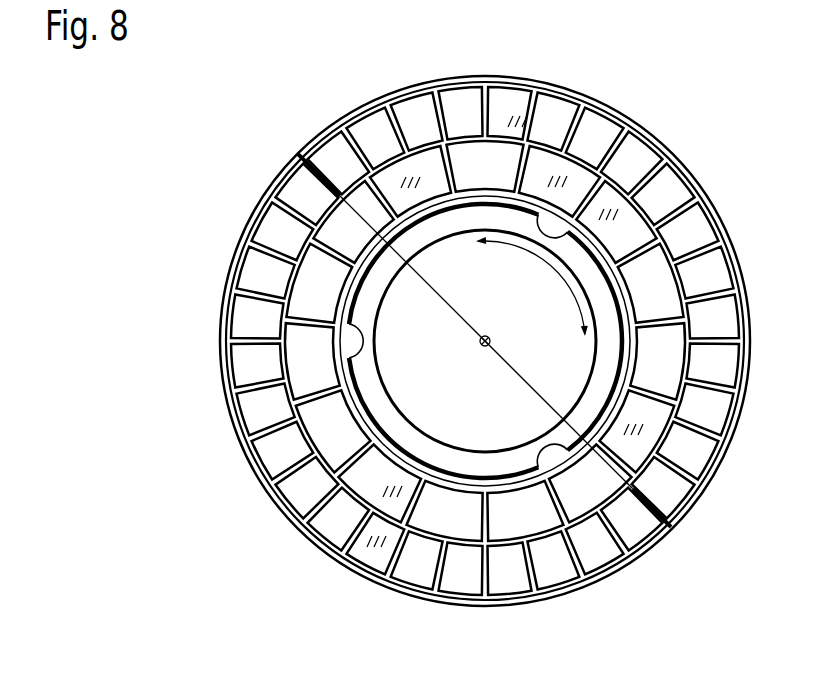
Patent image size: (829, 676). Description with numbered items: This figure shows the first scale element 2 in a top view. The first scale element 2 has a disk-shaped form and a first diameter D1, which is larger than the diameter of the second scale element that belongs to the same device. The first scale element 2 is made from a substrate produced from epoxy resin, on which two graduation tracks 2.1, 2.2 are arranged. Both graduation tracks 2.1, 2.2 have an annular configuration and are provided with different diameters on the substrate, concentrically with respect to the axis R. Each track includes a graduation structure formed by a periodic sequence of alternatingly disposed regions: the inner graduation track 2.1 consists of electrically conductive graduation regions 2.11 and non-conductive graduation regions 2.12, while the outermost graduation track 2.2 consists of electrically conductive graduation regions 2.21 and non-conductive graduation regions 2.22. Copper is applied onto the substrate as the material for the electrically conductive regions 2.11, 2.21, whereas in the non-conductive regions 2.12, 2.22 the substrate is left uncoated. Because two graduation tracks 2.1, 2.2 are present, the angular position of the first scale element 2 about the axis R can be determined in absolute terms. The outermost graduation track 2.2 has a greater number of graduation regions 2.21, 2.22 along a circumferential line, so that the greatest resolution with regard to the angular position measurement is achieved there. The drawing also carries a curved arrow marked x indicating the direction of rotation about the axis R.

The first scale element 2 is at (262, 193).
The graduation track 2.1 is at (342, 309).
The electrically conductive graduation regions 2.11 is at (346, 412).
The non-conductive graduation regions 2.12 is at (383, 442).
The outermost graduation track 2.2 is at (258, 272).
The electrically conductive graduation regions 2.21 is at (278, 484).
The non-conductive graduation regions 2.22 is at (298, 527).
The first diameter D1 is at (700, 557).
The axis R is at (478, 343).
The direction of rotation x is at (532, 286).